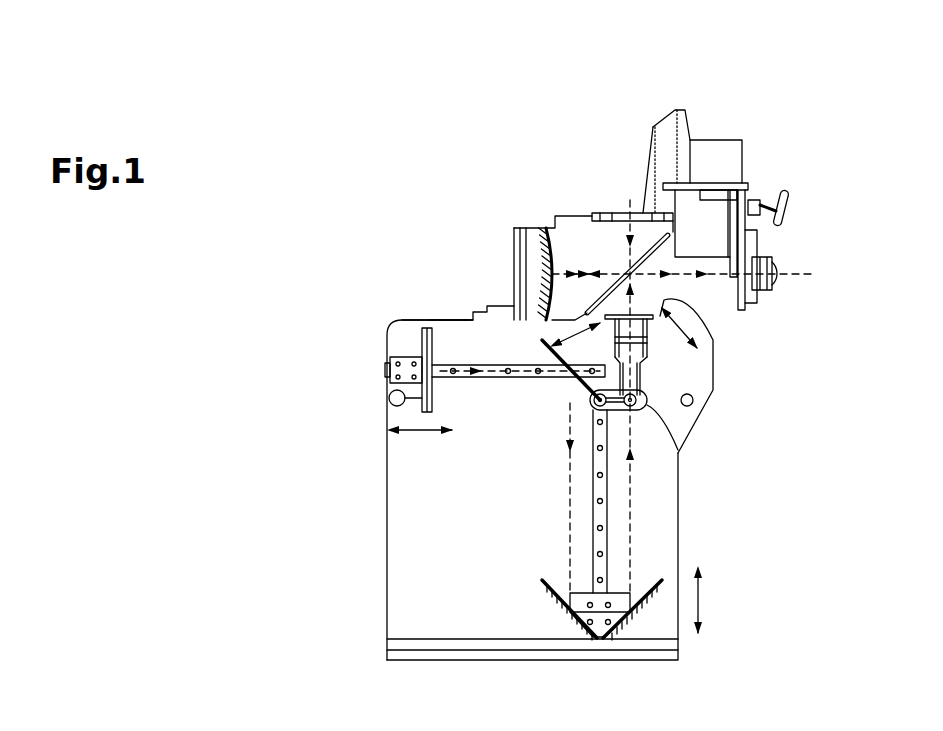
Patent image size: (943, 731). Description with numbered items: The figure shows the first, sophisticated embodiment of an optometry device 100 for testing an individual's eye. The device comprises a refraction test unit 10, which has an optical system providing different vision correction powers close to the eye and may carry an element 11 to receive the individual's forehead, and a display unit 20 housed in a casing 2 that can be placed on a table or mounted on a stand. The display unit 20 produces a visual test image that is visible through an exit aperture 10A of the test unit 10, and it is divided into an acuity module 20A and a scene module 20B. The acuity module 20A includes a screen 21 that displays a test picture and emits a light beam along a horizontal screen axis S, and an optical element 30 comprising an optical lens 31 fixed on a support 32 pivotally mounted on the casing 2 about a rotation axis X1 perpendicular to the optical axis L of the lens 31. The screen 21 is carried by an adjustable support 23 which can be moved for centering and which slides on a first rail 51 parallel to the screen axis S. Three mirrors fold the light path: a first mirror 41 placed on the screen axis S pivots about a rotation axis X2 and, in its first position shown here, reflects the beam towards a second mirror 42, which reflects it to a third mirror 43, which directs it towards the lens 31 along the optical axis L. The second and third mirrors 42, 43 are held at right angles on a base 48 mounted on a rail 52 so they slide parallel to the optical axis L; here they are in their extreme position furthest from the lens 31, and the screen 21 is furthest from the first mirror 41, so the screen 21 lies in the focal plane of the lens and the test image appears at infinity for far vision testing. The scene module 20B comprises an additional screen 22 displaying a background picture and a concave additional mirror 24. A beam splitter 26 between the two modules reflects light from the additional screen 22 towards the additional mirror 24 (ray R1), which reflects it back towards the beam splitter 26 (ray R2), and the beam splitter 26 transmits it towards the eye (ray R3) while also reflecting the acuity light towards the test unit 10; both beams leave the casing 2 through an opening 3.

The optometry device 100 is at (716, 85).
The scene module 20B is at (525, 170).
The additional screen 22 is at (626, 213).
The additional mirror 24 is at (515, 240).
The ray R1 is at (628, 238).
The ray R2 is at (597, 272).
The ray R3 is at (576, 274).
The beam splitter 26 is at (678, 257).
The forehead receiving element 11 is at (790, 206).
The opening 3 is at (663, 248).
The exit aperture 10A is at (778, 268).
The refraction test unit 10 is at (784, 304).
The optical element 30 is at (652, 310).
The optical lens 31 is at (644, 334).
The support 32 is at (644, 361).
The rotation axis X1 is at (645, 404).
The rotation axis X2 is at (585, 406).
The rail 52 is at (603, 512).
The optical axis L is at (632, 522).
The base 48 is at (581, 593).
The third mirror 43 is at (656, 580).
The second mirror 42 is at (537, 582).
The first mirror 41 is at (542, 350).
The first rail 51 is at (557, 373).
The screen axis S is at (492, 377).
The adjustable support 23 is at (410, 357).
The screen 21 is at (389, 398).
The display unit 20 is at (390, 322).
The casing 2 is at (442, 320).
The acuity module 20A is at (350, 500).